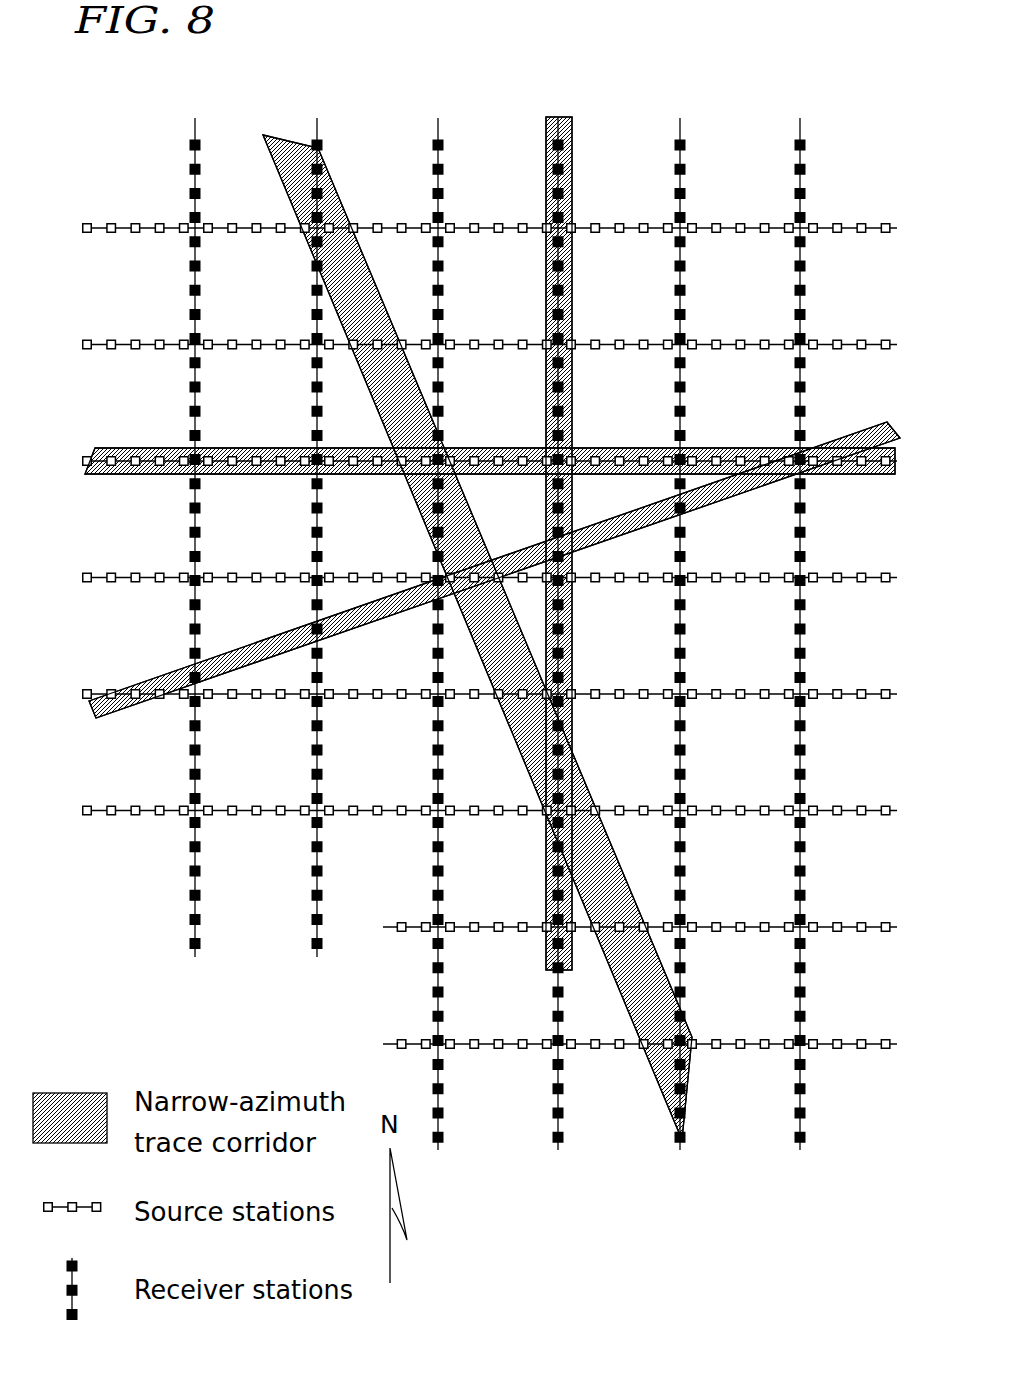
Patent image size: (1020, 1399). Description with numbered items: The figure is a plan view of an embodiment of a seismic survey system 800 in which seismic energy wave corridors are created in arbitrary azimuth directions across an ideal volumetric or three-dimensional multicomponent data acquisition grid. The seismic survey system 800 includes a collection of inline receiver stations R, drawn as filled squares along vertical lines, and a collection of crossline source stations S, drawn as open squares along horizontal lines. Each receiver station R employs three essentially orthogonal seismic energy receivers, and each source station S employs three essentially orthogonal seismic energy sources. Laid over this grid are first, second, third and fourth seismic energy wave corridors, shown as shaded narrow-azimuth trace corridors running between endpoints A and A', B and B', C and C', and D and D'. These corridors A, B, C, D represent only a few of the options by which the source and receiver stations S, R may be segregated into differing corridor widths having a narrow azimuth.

The seismic survey system 800 is at (764, 53).
The first seismic energy wave corridor A is at (495, 556).
The second seismic energy wave corridor B is at (493, 480).
The third seismic energy wave corridor C is at (467, 637).
The fourth seismic energy wave corridor D is at (544, 547).
The receiver station R is at (688, 143).
The source station S is at (841, 226).